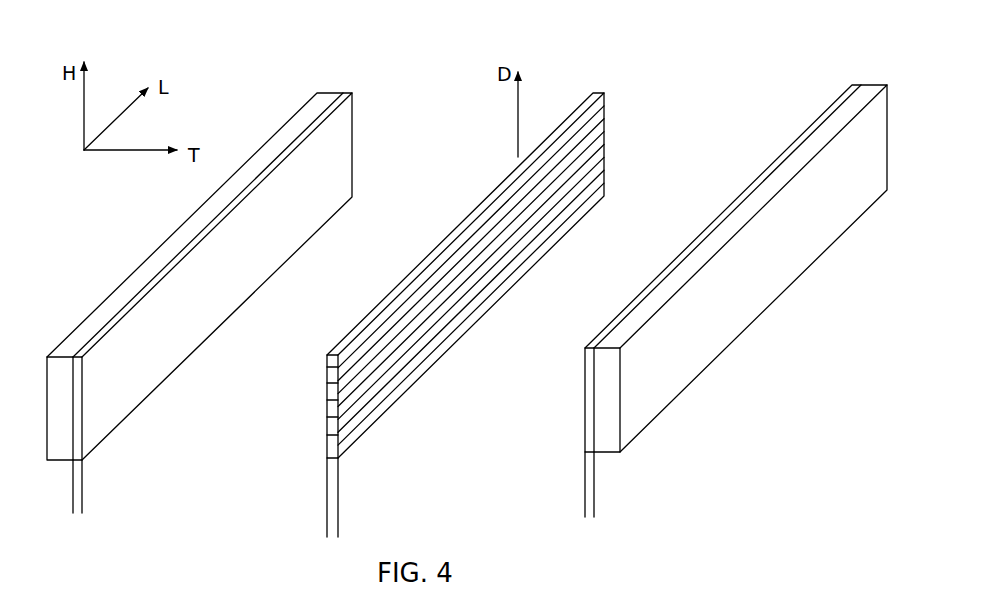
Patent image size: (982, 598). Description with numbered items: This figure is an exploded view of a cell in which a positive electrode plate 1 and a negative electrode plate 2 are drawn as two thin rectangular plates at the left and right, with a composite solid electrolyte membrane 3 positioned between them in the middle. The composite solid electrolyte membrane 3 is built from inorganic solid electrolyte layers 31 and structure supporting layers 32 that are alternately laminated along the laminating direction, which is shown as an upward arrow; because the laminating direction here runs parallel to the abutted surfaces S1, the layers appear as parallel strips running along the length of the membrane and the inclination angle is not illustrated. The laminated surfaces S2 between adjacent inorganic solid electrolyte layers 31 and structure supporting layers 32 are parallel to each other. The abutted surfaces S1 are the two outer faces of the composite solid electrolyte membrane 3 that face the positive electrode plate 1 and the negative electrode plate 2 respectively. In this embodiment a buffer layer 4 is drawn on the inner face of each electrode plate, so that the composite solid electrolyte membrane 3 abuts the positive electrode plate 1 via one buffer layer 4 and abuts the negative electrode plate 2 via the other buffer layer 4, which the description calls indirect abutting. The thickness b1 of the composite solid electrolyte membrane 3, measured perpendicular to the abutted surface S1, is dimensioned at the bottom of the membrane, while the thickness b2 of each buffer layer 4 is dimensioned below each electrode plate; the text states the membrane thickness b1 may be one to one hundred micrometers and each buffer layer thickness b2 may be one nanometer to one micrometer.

The positive electrode plate 1 is at (90, 327).
The negative electrode plate 2 is at (870, 85).
The composite solid electrolyte membrane 3 is at (558, 103).
The buffer layer 4 is at (135, 295).
The inorganic solid electrolyte layer 31 is at (329, 372).
The structure supporting layer 32 is at (327, 385).
The abutted surface S1 is at (312, 410).
The laminated surface S2 is at (333, 445).
The thickness b1 is at (388, 522).
The thickness b2 is at (130, 497).